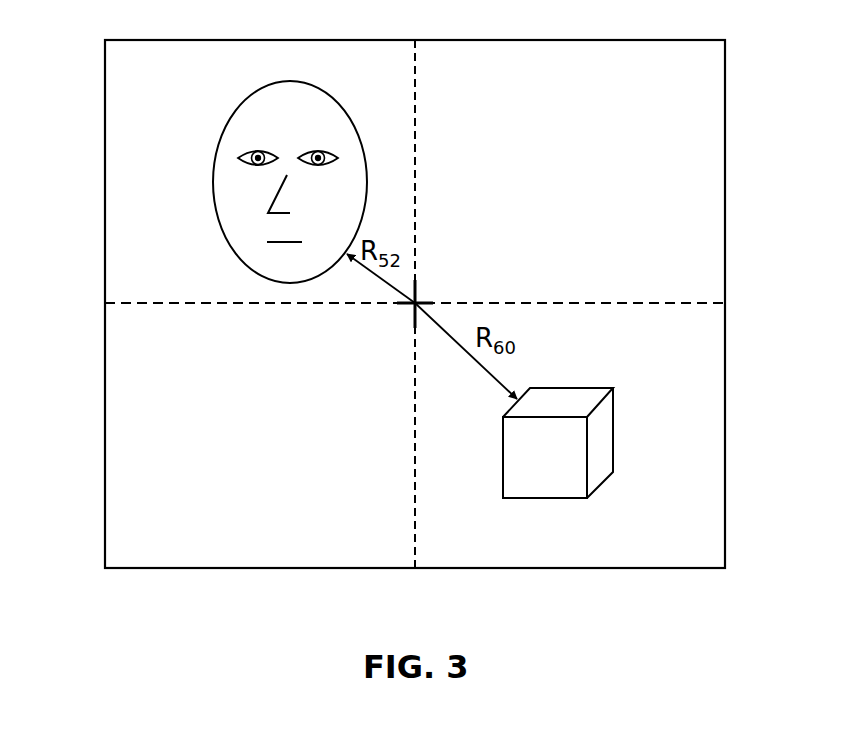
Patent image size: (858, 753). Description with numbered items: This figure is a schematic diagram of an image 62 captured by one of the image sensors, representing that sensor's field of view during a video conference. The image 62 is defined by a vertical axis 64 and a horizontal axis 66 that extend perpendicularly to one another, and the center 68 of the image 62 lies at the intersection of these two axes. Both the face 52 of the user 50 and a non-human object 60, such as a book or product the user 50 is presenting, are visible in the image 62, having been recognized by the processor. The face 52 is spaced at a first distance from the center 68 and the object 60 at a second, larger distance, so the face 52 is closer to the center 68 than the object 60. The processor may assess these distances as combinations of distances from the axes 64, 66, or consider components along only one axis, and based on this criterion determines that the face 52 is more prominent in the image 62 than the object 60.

The user 50 is at (226, 105).
The user's face 52 is at (215, 173).
The object 60 is at (587, 432).
The image 62 is at (725, 120).
The vertical axis 64 is at (416, 112).
The horizontal axis 66 is at (615, 301).
The center 68 is at (418, 295).